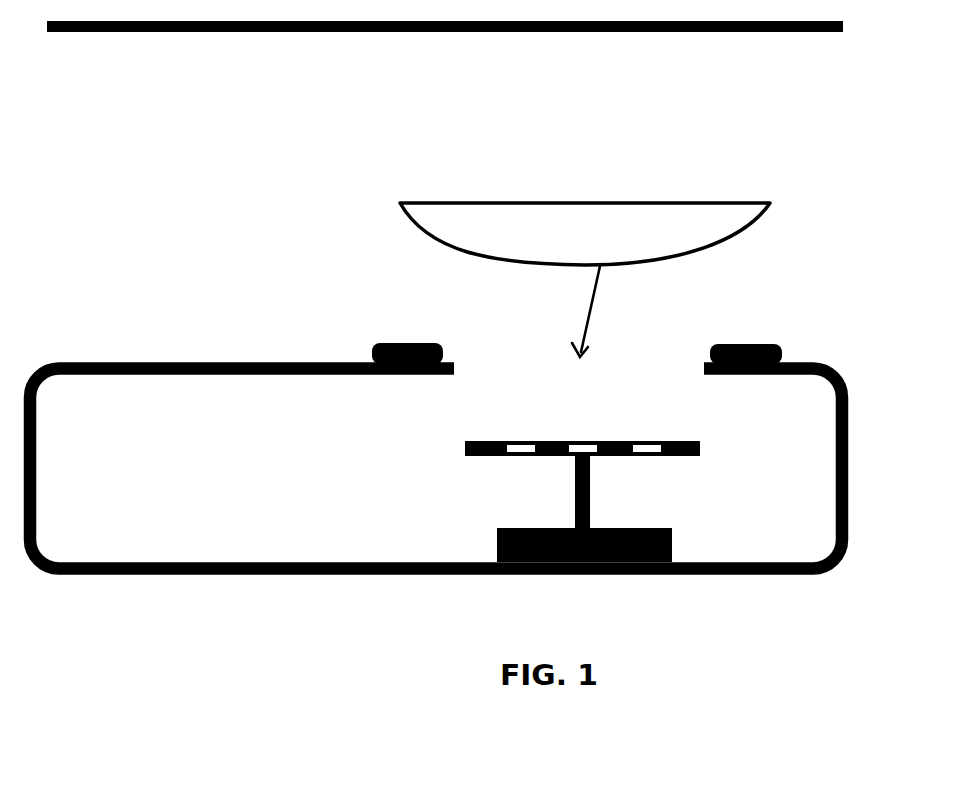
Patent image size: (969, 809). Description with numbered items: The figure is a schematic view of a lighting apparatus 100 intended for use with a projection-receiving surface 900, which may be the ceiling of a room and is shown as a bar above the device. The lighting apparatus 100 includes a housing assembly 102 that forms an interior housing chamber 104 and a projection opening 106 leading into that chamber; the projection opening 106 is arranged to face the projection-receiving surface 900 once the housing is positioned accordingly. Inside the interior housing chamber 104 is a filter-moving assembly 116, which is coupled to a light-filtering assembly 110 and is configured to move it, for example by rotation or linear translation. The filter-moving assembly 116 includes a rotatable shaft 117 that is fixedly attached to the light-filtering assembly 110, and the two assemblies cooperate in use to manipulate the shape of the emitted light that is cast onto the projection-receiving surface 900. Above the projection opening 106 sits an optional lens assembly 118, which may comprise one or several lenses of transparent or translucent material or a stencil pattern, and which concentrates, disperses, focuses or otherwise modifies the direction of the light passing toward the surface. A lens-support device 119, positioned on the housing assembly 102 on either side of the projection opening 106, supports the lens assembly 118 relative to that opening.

The projection-receiving surface 900 is at (83, 32).
The lens assembly 118 is at (420, 230).
The housing assembly 102 is at (435, 576).
The interior housing chamber 104 is at (128, 532).
The projection opening 106 is at (543, 386).
The lens-support device 119 is at (372, 353).
The light-filtering assembly 110 is at (700, 447).
The rotatable shaft 117 is at (590, 493).
The filter-moving assembly 116 is at (672, 545).
The lighting apparatus 100 is at (373, 678).